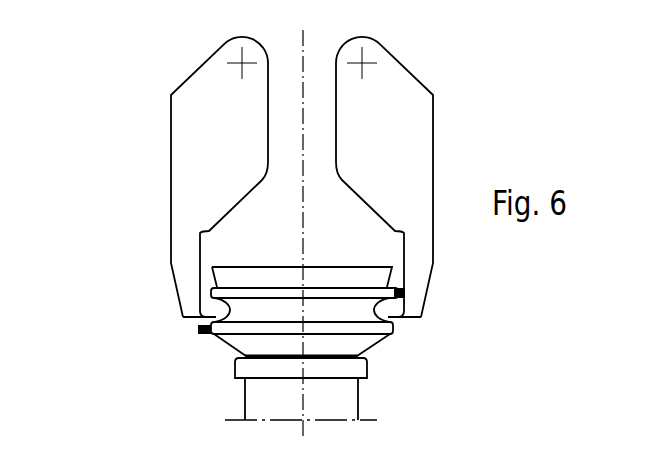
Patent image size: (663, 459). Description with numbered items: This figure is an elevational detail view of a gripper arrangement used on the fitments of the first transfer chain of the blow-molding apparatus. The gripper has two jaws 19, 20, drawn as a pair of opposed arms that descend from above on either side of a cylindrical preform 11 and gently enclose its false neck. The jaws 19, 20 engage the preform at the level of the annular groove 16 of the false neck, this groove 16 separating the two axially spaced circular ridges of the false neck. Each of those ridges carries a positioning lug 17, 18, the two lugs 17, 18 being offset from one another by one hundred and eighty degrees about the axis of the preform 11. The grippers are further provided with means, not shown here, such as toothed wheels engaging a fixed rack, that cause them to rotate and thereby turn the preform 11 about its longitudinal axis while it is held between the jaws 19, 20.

The cylindrical preform 11 is at (342, 399).
The annular groove 16 is at (245, 313).
The positioning lug 17 is at (198, 327).
The positioning lug 18 is at (405, 292).
The jaw 19 is at (198, 116).
The jaw 20 is at (415, 115).